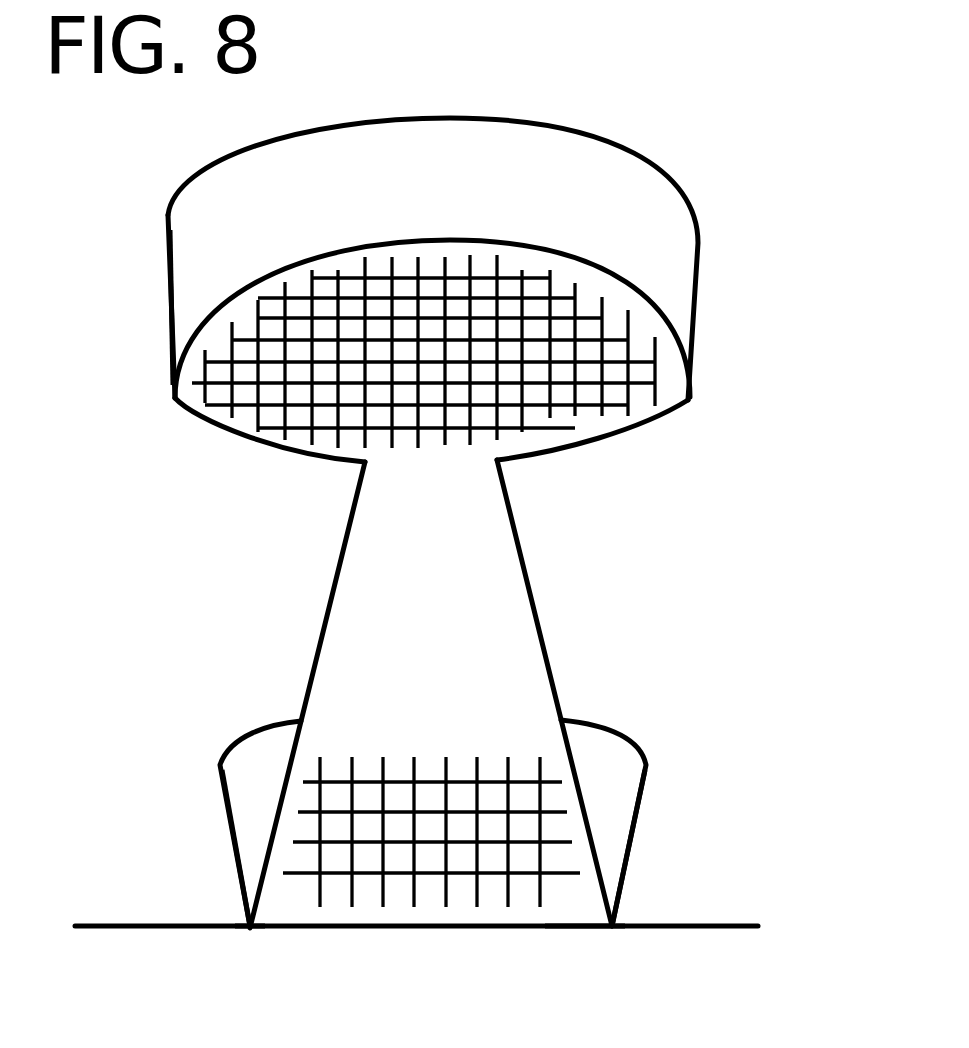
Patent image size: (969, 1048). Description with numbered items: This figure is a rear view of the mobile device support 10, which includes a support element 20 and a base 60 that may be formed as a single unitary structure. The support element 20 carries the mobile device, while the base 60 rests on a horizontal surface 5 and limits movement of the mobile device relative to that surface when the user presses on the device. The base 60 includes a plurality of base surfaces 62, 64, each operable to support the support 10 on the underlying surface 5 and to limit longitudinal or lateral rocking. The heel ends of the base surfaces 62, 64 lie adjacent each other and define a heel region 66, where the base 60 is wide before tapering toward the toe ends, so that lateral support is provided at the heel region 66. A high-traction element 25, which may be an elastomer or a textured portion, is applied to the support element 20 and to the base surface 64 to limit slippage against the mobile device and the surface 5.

The horizontal surface 5 is at (715, 912).
The mobile device support 10 is at (672, 150).
The support element 20 is at (160, 212).
The high-traction element 25 is at (352, 377).
The base 60 is at (265, 853).
The first base surface 62 is at (558, 930).
The second base surface 64 is at (493, 512).
The heel region 66 is at (247, 930).